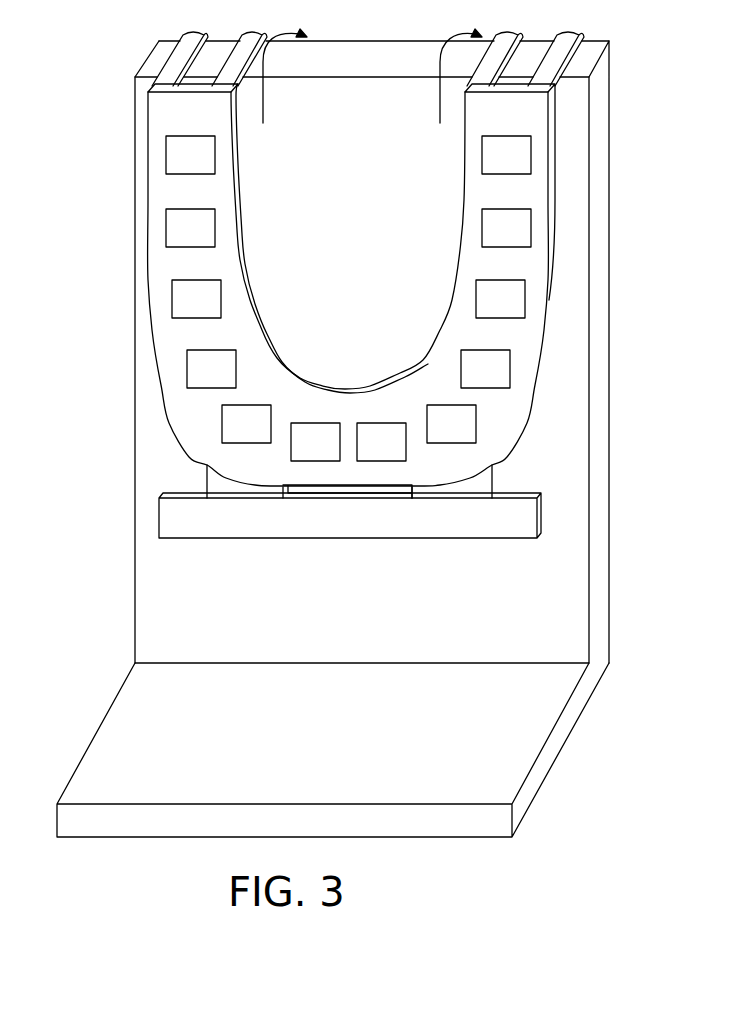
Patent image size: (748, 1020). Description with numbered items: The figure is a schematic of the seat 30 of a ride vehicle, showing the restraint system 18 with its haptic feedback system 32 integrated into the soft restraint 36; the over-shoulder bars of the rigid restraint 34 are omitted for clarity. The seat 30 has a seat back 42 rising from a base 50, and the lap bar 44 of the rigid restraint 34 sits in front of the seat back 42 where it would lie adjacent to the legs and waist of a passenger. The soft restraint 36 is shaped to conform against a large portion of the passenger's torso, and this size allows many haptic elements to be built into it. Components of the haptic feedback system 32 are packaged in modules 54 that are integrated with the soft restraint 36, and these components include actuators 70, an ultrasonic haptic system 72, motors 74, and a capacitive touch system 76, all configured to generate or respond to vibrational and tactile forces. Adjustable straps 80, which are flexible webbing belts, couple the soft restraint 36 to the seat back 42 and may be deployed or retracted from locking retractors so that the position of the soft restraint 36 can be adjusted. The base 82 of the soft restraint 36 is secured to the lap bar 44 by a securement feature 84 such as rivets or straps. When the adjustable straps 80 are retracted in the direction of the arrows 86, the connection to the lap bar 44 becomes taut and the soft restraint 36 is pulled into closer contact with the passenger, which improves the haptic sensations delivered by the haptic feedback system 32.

The restraint system 18 is at (394, 431).
The seat 30 is at (409, 337).
The haptic feedback system 32 is at (229, 243).
The rigid restraint 34 is at (350, 538).
The soft restraint 36 is at (529, 265).
The seat back 42 is at (598, 512).
The lap bar 44 is at (430, 522).
The base 50 is at (550, 755).
The modules 54 is at (533, 152).
The actuators 70 is at (215, 153).
The ultrasonic haptic system 72 is at (461, 370).
The motors 74 is at (220, 298).
The capacitive touch system 76 is at (212, 349).
The adjustable straps 80 is at (247, 68).
The base of the soft restraint 82 is at (352, 490).
The securement feature 84 is at (195, 475).
The arrows 86 is at (263, 96).